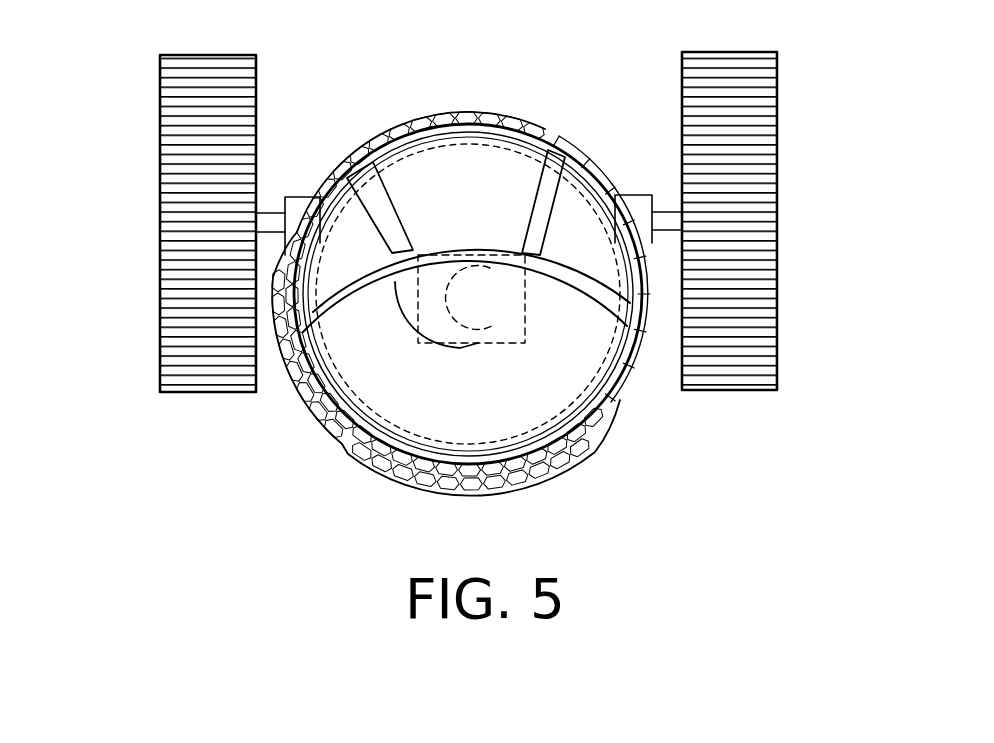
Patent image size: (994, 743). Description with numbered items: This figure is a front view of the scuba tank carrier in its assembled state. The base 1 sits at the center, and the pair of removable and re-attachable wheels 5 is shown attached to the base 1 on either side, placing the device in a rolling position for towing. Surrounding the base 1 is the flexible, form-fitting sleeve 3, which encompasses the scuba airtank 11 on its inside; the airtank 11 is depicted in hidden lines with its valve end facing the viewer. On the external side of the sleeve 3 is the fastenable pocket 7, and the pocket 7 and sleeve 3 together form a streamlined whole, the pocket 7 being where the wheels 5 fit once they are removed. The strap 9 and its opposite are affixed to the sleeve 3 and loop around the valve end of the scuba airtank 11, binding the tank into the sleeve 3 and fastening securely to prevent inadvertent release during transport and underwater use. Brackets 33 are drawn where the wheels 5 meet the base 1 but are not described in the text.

The base 1 is at (430, 116).
The flexible, form-fitting sleeve 3 is at (510, 117).
The pair of removable and re-attachable wheels 5 is at (160, 242).
The fastenable pocket 7 is at (380, 120).
The strap 9 is at (560, 130).
The scuba airtank 11 is at (617, 405).
The axle brackets 33 is at (293, 188).